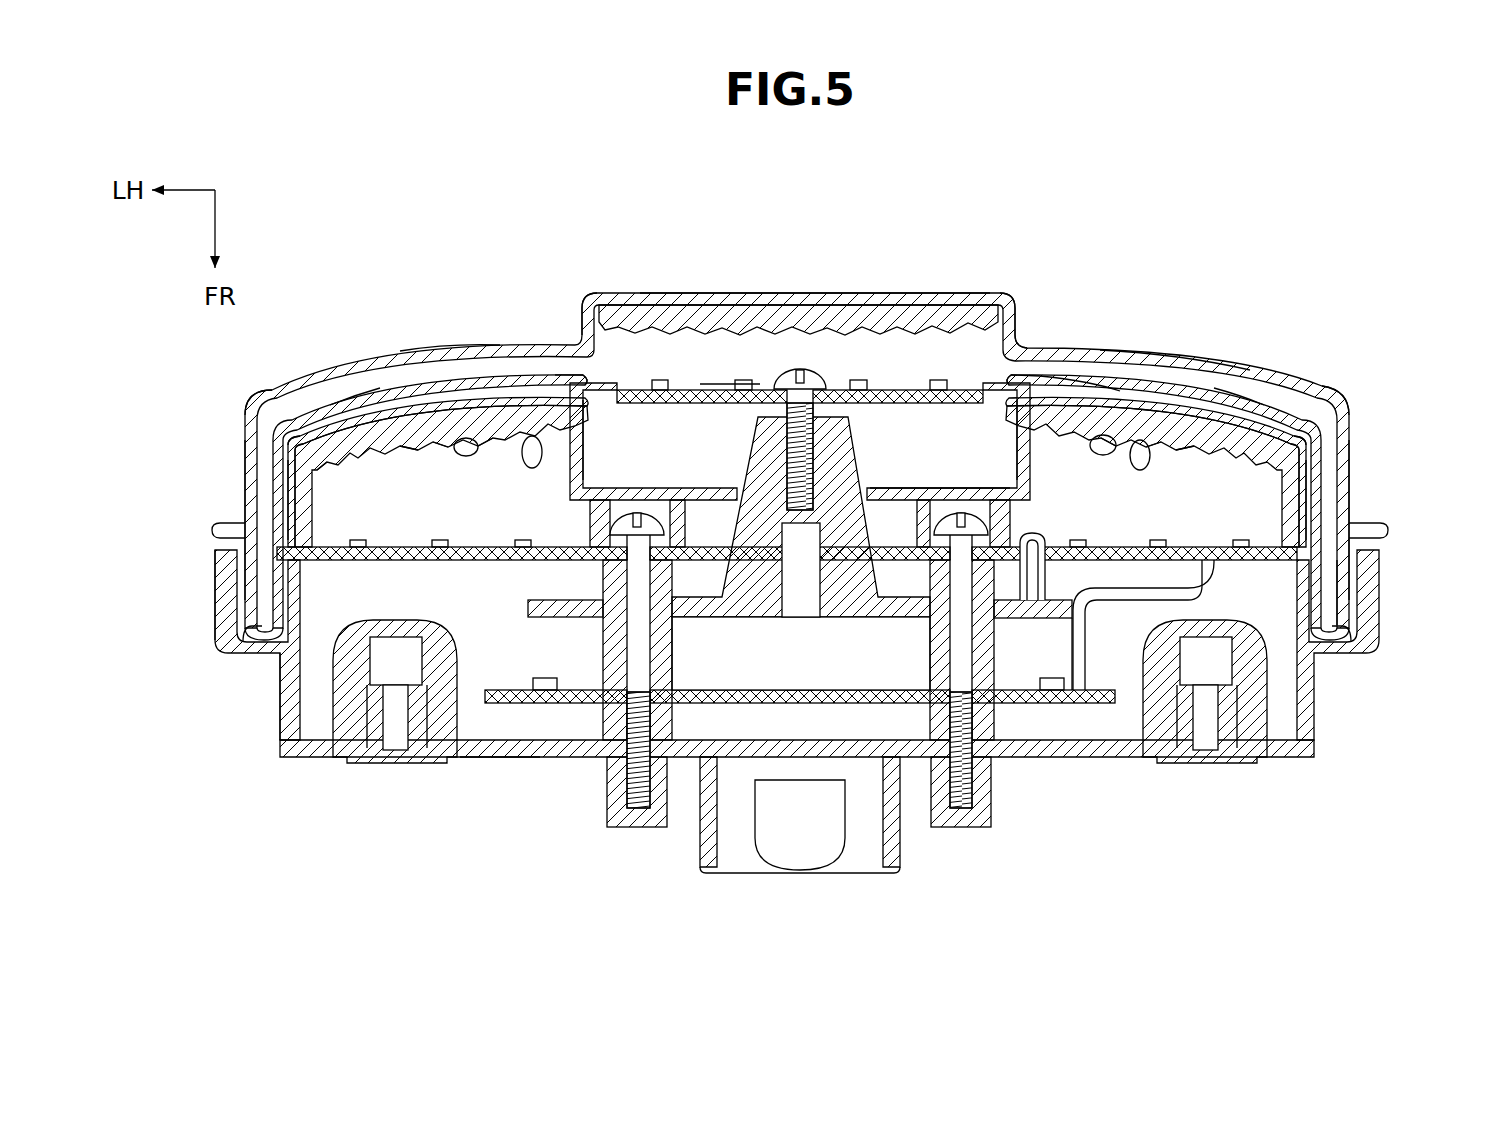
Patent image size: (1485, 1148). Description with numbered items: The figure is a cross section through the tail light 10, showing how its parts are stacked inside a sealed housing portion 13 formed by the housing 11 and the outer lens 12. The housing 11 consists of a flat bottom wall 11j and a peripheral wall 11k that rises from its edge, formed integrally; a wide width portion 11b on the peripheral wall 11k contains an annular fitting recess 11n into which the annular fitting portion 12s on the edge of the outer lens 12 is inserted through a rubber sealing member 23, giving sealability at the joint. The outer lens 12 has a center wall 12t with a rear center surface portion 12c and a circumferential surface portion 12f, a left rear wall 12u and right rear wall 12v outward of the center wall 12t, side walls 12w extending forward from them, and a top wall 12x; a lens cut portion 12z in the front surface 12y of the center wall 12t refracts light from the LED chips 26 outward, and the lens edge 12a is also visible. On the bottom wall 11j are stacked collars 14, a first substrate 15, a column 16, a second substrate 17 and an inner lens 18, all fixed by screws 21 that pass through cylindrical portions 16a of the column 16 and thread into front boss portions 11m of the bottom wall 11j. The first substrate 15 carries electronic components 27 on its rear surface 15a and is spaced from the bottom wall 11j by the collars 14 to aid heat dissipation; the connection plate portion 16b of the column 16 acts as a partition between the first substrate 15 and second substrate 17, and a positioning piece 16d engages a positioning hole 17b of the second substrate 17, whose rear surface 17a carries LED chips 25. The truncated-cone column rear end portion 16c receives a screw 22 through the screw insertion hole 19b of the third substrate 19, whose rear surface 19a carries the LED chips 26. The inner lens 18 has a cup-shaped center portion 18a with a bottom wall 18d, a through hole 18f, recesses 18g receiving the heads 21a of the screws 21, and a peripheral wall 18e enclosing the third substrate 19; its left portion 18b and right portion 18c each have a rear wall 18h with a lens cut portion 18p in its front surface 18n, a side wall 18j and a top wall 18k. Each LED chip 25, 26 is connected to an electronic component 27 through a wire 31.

The tail light 10 is at (298, 285).
The housing 11 is at (316, 764).
The wide width portion 11b is at (208, 572).
The bottom wall 11j is at (477, 762).
The peripheral wall 11k is at (283, 683).
The front boss portion 11m is at (700, 800).
The annular fitting recess 11n is at (258, 603).
The outer lens 12 is at (348, 362).
The cover edge 12a is at (1388, 530).
The rear center surface portion 12c is at (835, 296).
The circumferential surface portion 12f is at (1022, 330).
The annular fitting portion 12s is at (1350, 575).
The center wall 12t is at (750, 288).
The left rear wall 12u is at (433, 355).
The right rear wall 12v is at (1227, 363).
The side wall 12w is at (245, 440).
The top wall 12x is at (340, 375).
The front surface 12y is at (590, 330).
The lens cut portion 12z is at (610, 300).
The sealed housing portion 13 is at (440, 600).
The collar 14 is at (614, 700).
The first substrate 15 is at (878, 800).
The rear surface 15a is at (748, 800).
The column 16 is at (748, 440).
The cylindrical portion 16a is at (601, 620).
The connection plate portion 16b is at (532, 617).
The column rear end portion 16c is at (892, 470).
The positioning piece 16d is at (1075, 620).
The second substrate 17 is at (1262, 572).
The rear surface 17a is at (323, 430).
The positioning hole 17b is at (1035, 532).
The inner lens 18 is at (1142, 440).
The inner lens center portion 18a is at (572, 398).
The inner lens left portion 18b is at (341, 398).
The inner lens right portion 18c is at (1252, 394).
The bottom wall 18d is at (926, 380).
The peripheral wall 18e is at (1030, 437).
The through hole 18f is at (783, 370).
The recess 18g is at (586, 370).
The rear wall 18h is at (415, 440).
The side wall 18j is at (296, 475).
The top wall 18k is at (377, 467).
The front surface 18n is at (504, 538).
The lens cut portion 18p is at (450, 538).
The third substrate 19 is at (906, 485).
The rear surface 19a is at (737, 440).
The screw insertion hole 19b is at (822, 440).
The screw 21 is at (638, 806).
The head 21a is at (637, 511).
The screw 22 is at (801, 368).
The sealing member 23 is at (1352, 612).
The LED chip 25 is at (373, 403).
The LED chip 26 is at (660, 378).
The electronic component 27 is at (545, 692).
The wire 31 is at (1208, 660).